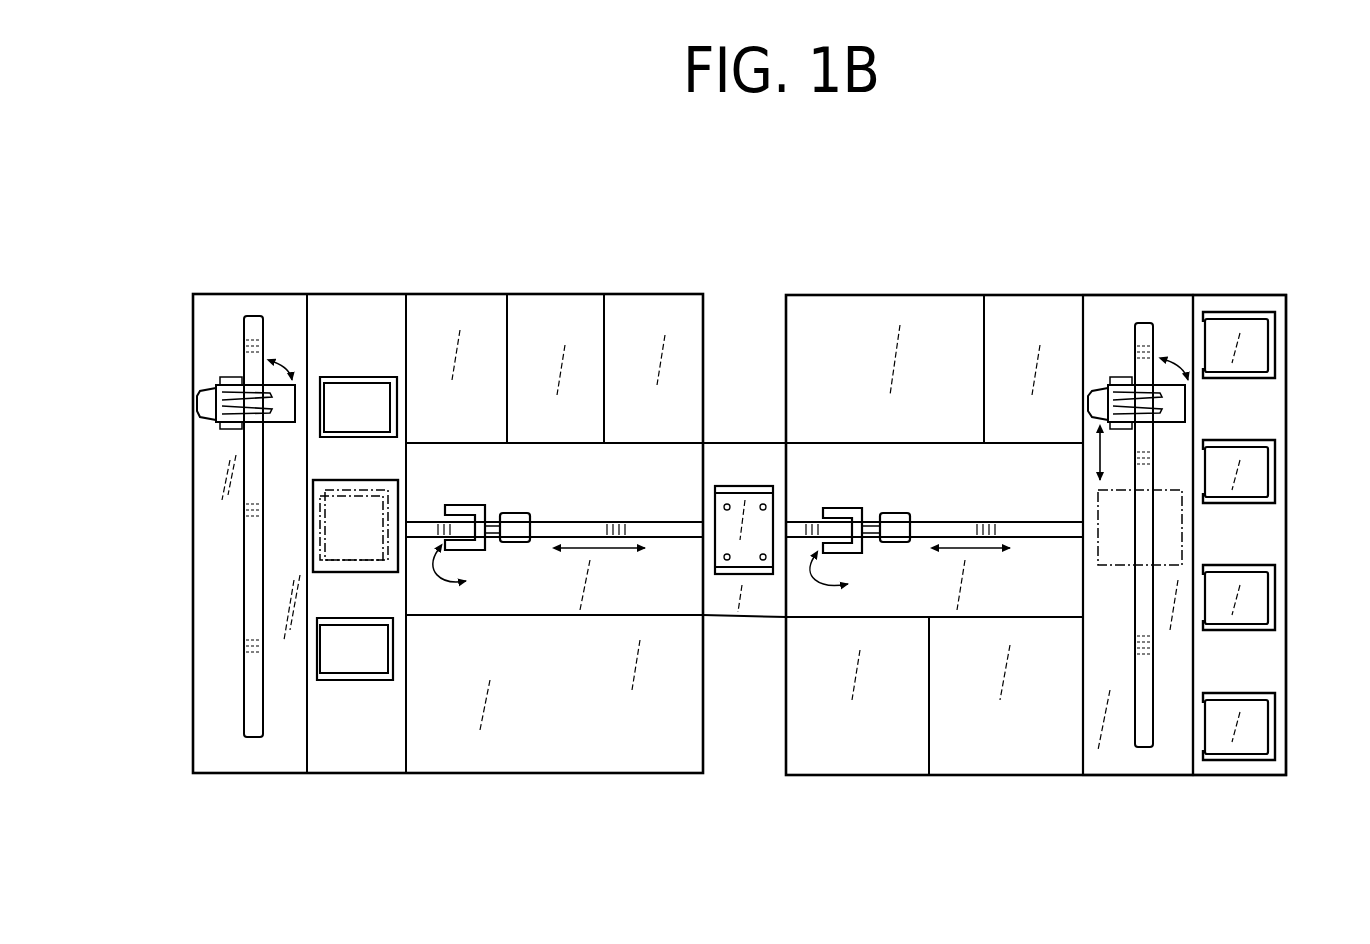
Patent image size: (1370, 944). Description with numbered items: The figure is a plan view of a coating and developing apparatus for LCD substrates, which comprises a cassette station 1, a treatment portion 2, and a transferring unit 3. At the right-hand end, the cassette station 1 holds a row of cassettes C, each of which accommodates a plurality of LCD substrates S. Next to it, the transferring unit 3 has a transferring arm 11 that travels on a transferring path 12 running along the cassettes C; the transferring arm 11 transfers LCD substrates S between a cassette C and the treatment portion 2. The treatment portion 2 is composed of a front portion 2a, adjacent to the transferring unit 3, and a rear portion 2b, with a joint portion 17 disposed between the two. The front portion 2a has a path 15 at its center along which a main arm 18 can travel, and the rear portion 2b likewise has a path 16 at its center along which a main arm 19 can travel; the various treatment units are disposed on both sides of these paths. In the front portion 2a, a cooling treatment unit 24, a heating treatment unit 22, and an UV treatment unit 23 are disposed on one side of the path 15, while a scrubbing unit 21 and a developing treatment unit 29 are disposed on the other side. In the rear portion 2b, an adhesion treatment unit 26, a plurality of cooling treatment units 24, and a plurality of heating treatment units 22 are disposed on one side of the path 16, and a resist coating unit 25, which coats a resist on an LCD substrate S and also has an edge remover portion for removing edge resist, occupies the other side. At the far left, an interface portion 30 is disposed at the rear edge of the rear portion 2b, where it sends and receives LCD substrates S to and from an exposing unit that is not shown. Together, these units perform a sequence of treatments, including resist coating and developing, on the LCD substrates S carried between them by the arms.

The cassette station 1 is at (1178, 787).
The treatment portion 2 is at (785, 273).
The front portion 2a is at (861, 282).
The rear portion 2b is at (632, 257).
The transferring unit 3 is at (1105, 787).
The transferring arm 11 is at (1163, 378).
The transferring path 12 is at (1133, 352).
The path 15 is at (950, 522).
The path 16 is at (592, 521).
The joint portion 17 is at (740, 486).
The main arm 18 is at (860, 502).
The main arm 19 is at (462, 505).
The scrubbing unit 21 is at (1000, 764).
The heating treatment unit 22 is at (480, 296).
The UV treatment unit 23 is at (885, 369).
The cooling treatment unit 24 is at (600, 296).
The resist coating unit 25 is at (553, 774).
The adhesion treatment unit 26 is at (653, 368).
The developing treatment unit 29 is at (850, 764).
The interface portion 30 is at (250, 782).
The LCD substrate S is at (1250, 327).
The cassette C is at (1287, 345).